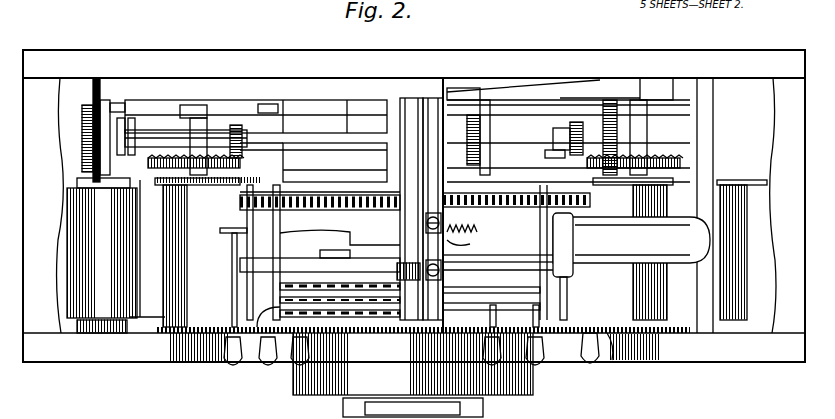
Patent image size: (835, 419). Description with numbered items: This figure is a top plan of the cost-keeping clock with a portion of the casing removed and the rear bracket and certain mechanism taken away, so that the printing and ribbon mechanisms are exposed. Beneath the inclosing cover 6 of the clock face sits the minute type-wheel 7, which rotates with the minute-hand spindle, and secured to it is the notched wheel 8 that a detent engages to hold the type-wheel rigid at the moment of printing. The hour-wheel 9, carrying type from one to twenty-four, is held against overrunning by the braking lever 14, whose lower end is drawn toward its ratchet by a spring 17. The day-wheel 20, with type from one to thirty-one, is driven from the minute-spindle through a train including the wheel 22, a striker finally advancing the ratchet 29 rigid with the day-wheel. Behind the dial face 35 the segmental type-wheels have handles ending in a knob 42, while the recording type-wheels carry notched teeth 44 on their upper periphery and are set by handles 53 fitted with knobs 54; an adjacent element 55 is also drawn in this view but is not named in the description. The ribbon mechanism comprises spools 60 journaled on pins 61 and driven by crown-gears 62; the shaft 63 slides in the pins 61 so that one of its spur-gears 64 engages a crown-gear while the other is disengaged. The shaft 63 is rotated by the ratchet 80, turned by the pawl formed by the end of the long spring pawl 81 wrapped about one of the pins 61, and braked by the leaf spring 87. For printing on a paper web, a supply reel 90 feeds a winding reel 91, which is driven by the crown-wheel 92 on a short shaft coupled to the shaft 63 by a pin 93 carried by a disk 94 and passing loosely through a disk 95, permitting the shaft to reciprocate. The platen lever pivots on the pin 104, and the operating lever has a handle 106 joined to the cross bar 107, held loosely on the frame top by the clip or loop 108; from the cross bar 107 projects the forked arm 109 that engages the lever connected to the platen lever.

The inclosing cover 6 is at (413, 375).
The minute type-wheel 7 is at (501, 243).
The notched wheel 8 is at (560, 196).
The hour-wheel 9 is at (350, 215).
The braking lever 14 is at (490, 190).
The spring 17 is at (495, 252).
The day-wheel 20 is at (272, 290).
The wheel 22 is at (300, 240).
The ratchet 29 is at (280, 264).
The dial face 35 is at (640, 362).
The knob 42 is at (226, 360).
The notched teeth 44 is at (318, 345).
The handles 53 is at (490, 318).
The knobs 54 is at (300, 370).
The foot 55 is at (262, 362).
The spools 60 is at (188, 186).
The pins 61 is at (236, 125).
The crown-gears 62 is at (160, 155).
The shaft 63 is at (490, 145).
The spur-gears 64 is at (268, 105).
The ratchet 80 is at (475, 98).
The spring pawl 81 is at (318, 115).
The leaf spring 87 is at (560, 80).
The supply reel 90 is at (740, 185).
The winding reel 91 is at (65, 190).
The crown-wheel 92 is at (85, 125).
The pin 93 is at (110, 115).
The disk 94 is at (121, 118).
The disk 95 is at (132, 118).
The pin 104 is at (655, 105).
The handle 106 is at (631, 266).
The cross bar 107 is at (418, 110).
The clip or loop 108 is at (433, 285).
The arm 109 is at (368, 140).